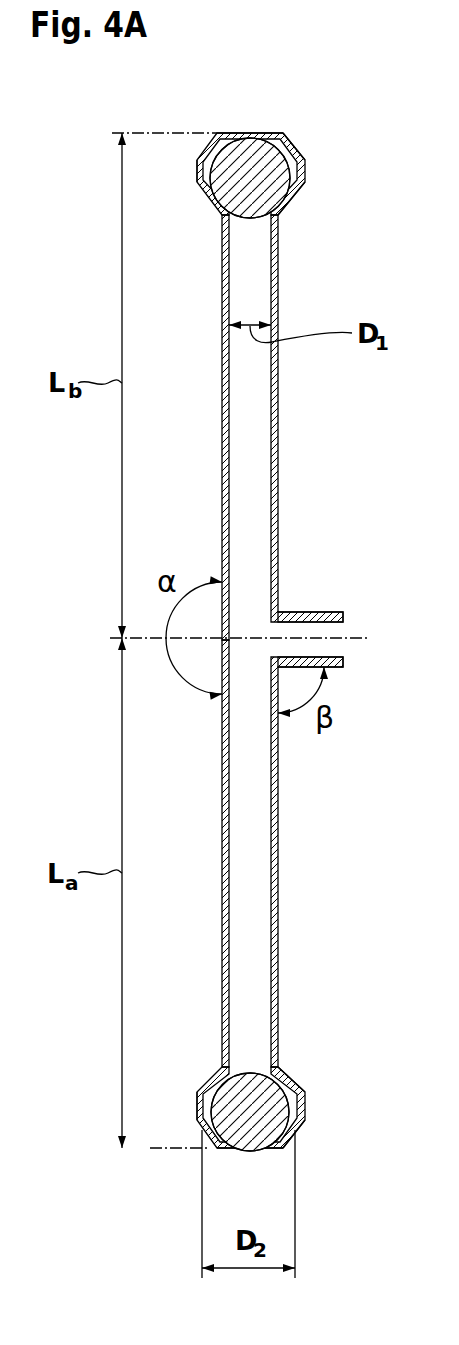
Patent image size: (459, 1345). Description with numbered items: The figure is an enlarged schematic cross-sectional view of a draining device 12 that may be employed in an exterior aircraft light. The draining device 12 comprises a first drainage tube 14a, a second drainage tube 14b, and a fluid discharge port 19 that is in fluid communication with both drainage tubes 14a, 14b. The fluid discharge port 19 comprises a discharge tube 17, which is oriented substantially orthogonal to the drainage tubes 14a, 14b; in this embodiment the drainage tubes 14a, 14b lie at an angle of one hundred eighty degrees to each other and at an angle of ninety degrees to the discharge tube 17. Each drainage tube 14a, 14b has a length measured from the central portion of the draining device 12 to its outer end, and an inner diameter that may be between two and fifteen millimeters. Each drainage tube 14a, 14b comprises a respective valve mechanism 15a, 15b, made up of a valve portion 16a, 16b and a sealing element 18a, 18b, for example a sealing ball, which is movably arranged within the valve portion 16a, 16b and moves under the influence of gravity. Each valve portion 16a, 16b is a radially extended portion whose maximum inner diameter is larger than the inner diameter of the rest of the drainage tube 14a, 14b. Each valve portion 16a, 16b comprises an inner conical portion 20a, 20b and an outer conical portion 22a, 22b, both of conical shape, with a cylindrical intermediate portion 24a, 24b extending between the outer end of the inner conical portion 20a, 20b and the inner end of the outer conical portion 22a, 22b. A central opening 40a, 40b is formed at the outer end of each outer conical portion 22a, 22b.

The draining device 12 is at (322, 107).
The first drainage tube 14a is at (287, 840).
The second drainage tube 14b is at (288, 438).
The valve mechanism 15a is at (302, 1042).
The valve mechanism 15b is at (305, 235).
The valve portion 16a is at (312, 1102).
The valve portion 16b is at (312, 178).
The discharge tube 17 is at (348, 662).
The sealing element 18a is at (247, 1118).
The sealing element 18b is at (233, 172).
The fluid discharge port 19 is at (312, 602).
The inner conical portion 20a is at (287, 1077).
The inner conical portion 20b is at (290, 202).
The outer conical portion 22a is at (293, 1132).
The outer conical portion 22b is at (300, 140).
The intermediate portion 24a is at (193, 1103).
The intermediate portion 24b is at (197, 170).
The central opening 40a is at (248, 1155).
The central opening 40b is at (252, 122).